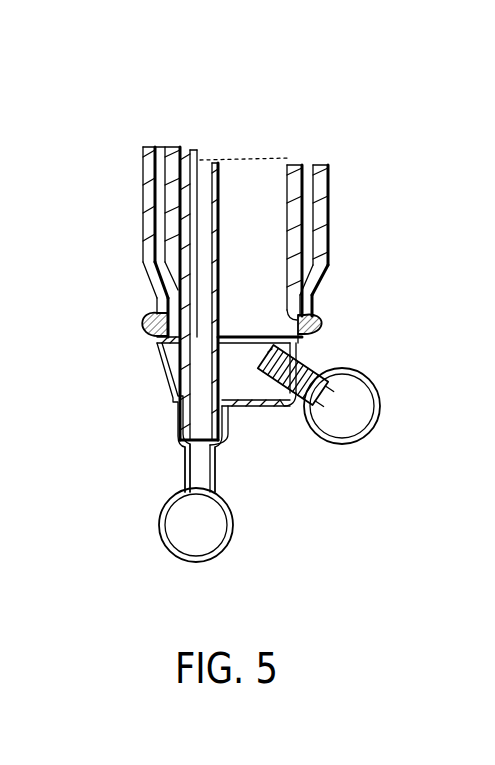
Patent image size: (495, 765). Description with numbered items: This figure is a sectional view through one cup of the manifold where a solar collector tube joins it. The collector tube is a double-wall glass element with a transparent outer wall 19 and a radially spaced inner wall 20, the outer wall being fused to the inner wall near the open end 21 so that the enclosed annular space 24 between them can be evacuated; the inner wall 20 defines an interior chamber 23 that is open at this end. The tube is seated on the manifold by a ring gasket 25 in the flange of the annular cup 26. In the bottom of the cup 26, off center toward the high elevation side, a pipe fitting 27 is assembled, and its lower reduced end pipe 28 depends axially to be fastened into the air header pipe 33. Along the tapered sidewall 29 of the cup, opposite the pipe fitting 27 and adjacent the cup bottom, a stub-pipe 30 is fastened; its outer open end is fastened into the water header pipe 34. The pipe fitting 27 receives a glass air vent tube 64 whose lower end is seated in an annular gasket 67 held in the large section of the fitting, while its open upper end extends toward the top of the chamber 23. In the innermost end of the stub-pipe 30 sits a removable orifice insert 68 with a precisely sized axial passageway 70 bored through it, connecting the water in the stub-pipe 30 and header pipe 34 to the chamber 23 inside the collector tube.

The outer wall 19 is at (330, 205).
The inner wall 20 is at (289, 168).
The open end 21 is at (228, 344).
The interior chamber 23 is at (265, 252).
The annular space 24 is at (305, 186).
The ring gasket 25 is at (312, 320).
The cup 26 is at (308, 338).
The pipe fitting 27 is at (178, 422).
The reduced end pipe 28 is at (218, 477).
The tapered sidewall 29 is at (306, 348).
The stub-pipe 30 is at (298, 400).
The air header pipe 33 is at (234, 531).
The water header pipe 34 is at (381, 405).
The air vent tube 64 is at (220, 207).
The annular gasket 67 is at (216, 399).
The orifice insert 68 is at (320, 377).
The passageway 70 is at (270, 360).